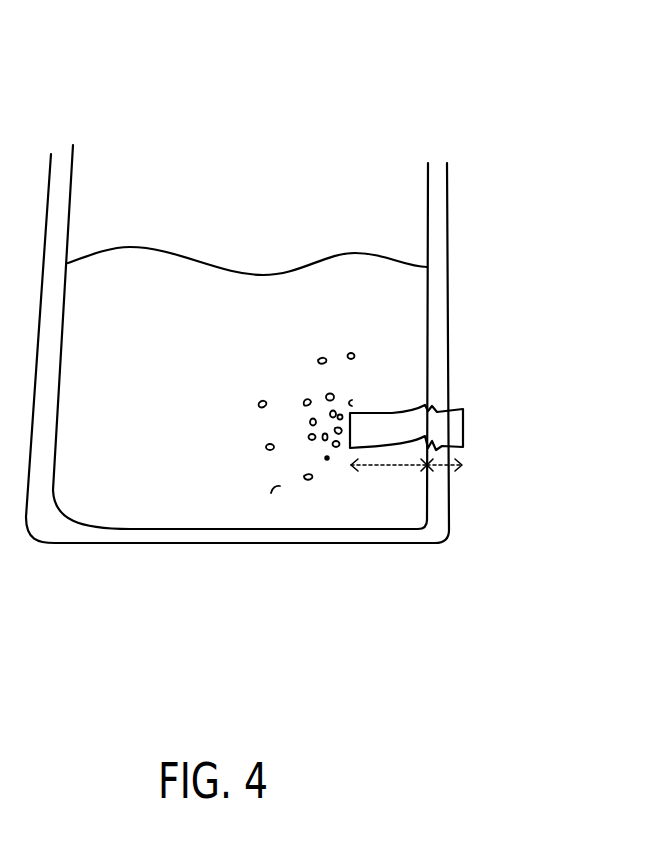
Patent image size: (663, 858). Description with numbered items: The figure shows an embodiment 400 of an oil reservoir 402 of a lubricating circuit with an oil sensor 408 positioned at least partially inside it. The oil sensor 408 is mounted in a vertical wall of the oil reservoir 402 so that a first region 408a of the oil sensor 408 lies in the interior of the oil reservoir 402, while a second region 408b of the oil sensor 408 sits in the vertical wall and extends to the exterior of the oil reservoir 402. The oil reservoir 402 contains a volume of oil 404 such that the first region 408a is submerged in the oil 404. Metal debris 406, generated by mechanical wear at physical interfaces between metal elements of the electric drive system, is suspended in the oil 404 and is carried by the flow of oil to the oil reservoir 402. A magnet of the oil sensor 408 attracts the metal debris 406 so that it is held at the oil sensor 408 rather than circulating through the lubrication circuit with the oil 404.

The embodiment 400 is at (518, 65).
The oil reservoir 402 is at (447, 186).
The oil 404 is at (167, 430).
The metal debris 406 is at (293, 366).
The oil sensor 408 is at (457, 408).
The first region 408a is at (413, 467).
The second region 408b is at (458, 465).